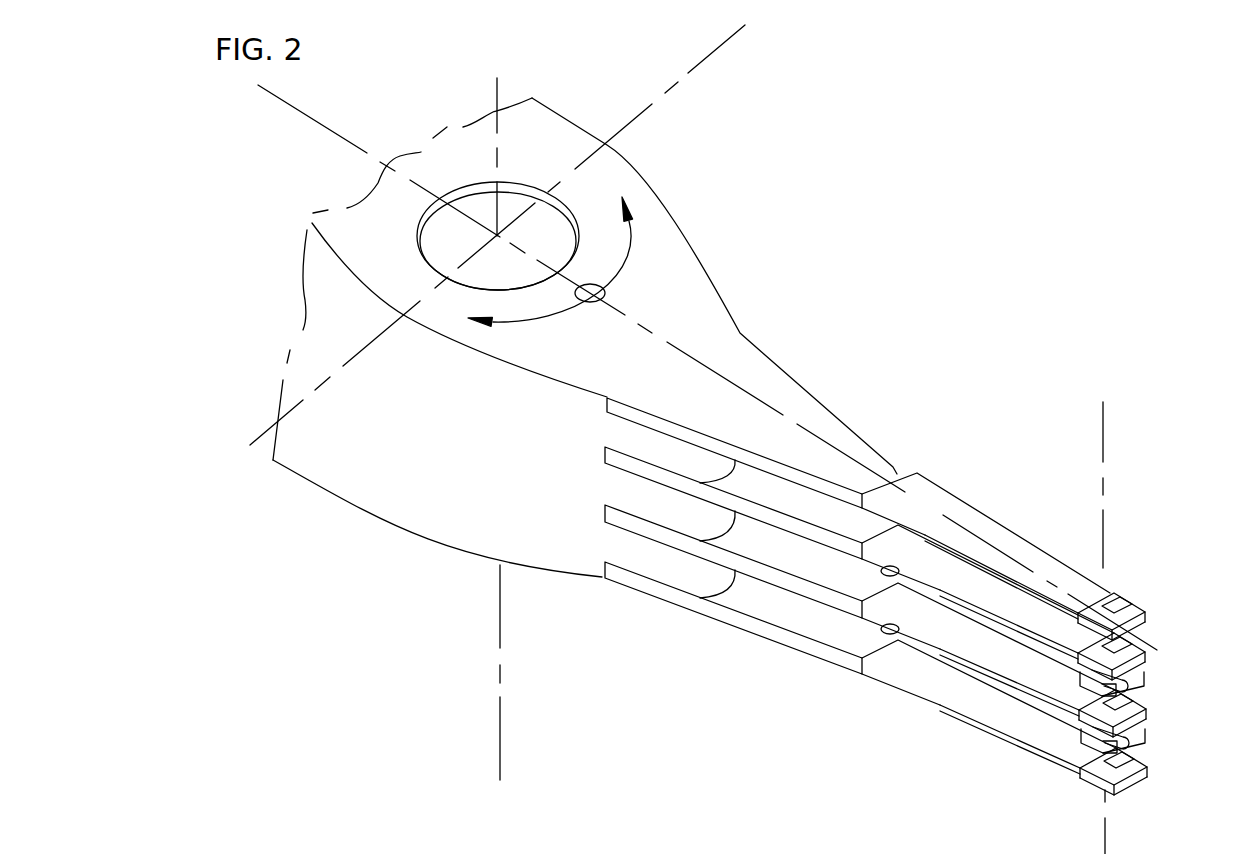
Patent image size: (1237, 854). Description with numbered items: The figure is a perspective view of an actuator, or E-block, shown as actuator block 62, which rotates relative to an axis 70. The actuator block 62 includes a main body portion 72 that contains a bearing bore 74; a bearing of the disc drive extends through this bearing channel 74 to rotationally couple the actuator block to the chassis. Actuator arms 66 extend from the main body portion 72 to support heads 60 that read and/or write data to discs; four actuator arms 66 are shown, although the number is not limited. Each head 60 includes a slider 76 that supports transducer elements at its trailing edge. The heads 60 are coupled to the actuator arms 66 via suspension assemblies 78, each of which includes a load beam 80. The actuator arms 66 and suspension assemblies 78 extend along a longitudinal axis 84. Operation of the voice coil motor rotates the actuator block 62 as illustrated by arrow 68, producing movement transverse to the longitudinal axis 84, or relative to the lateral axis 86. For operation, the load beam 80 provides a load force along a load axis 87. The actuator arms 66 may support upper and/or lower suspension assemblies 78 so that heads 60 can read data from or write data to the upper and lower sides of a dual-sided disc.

The head 60 is at (1175, 606).
The actuator block 62 is at (745, 157).
The actuator arms 66 is at (696, 577).
The arrow 68 is at (565, 312).
The axis 70 is at (498, 100).
The main body portion 72 is at (533, 133).
The bearing bore 74 is at (530, 228).
The slider 76 is at (1150, 599).
The suspension assemblies 78 is at (967, 676).
The load beam 80 is at (911, 514).
The longitudinal axis 84 is at (606, 300).
The lateral axis 86 is at (630, 125).
The load axis 87 is at (1104, 448).